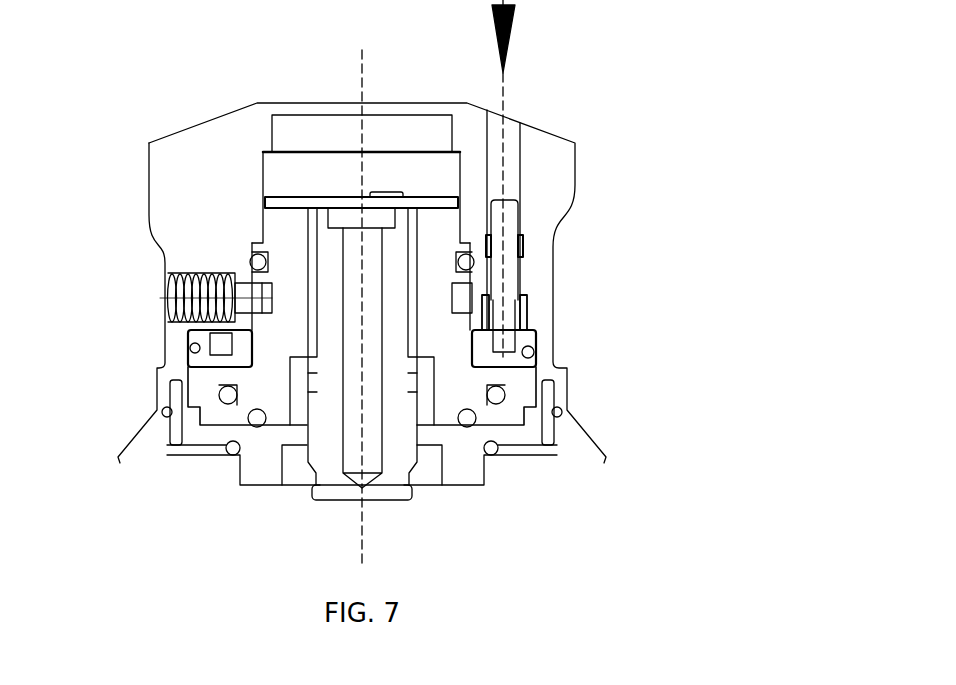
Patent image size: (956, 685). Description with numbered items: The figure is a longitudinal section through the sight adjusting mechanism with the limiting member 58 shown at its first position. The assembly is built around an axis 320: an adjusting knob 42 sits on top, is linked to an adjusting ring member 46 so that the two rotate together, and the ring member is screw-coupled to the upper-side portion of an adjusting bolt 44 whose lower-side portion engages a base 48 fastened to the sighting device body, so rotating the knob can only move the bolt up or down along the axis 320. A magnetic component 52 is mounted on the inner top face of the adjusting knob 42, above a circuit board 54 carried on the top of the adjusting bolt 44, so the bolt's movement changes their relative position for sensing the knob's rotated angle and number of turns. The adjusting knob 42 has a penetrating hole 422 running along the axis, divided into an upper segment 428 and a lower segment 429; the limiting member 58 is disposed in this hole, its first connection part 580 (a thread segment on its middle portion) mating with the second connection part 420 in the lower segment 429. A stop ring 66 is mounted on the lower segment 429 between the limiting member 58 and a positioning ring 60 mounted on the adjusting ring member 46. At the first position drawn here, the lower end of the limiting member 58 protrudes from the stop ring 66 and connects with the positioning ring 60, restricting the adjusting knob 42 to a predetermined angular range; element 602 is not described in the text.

The adjusting knob 42 is at (208, 215).
The adjusting bolt 44 is at (380, 265).
The adjusting ring member 46 is at (493, 380).
The base 48 is at (212, 427).
The magnetic component 52 is at (330, 142).
The circuit board 54 is at (292, 197).
The limiting member 58 is at (513, 222).
The positioning ring 60 is at (205, 342).
The stop ring 66 is at (518, 320).
The axis 320 is at (365, 70).
The second connection part 420 is at (522, 280).
The penetrating hole 422 is at (497, 137).
The upper segment 428 is at (518, 197).
The lower segment 429 is at (520, 238).
The first connection part 580 is at (522, 260).
The O-ring 602 is at (503, 350).